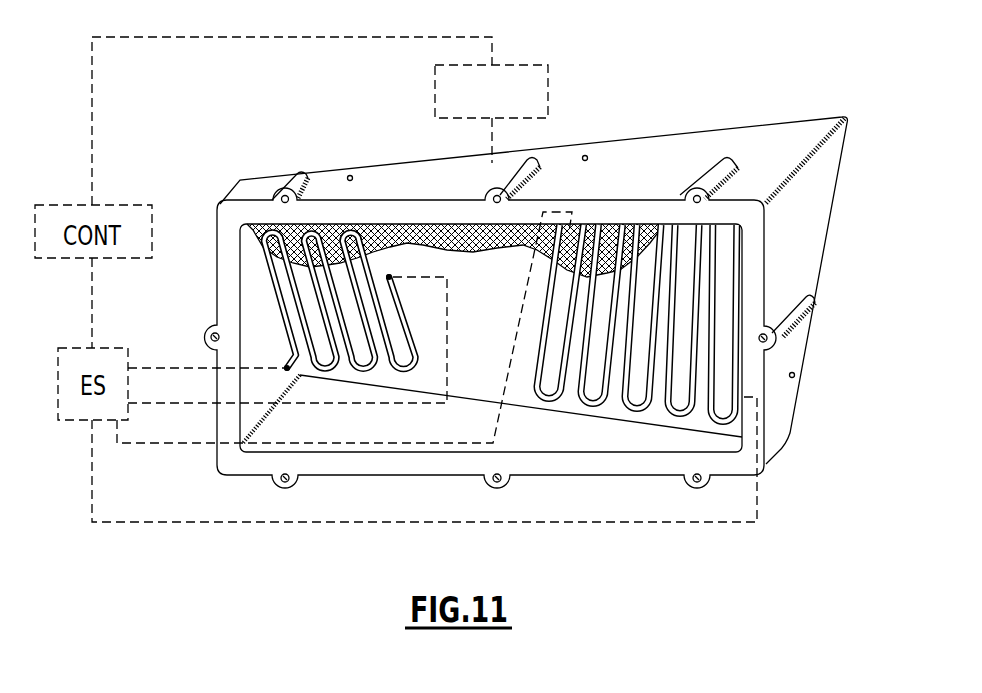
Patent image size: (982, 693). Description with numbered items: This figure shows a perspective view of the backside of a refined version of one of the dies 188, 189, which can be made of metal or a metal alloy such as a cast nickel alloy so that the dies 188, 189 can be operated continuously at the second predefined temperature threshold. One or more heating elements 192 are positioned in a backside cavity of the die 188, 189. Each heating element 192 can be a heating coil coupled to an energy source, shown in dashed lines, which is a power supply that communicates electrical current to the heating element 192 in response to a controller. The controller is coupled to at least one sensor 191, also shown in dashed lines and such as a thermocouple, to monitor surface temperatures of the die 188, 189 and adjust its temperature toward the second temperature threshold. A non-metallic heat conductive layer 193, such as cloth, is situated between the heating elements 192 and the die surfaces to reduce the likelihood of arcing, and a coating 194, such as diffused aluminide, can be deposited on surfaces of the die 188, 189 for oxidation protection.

The die 188 is at (485, 301).
The die 189 is at (259, 177).
The sensor 191 is at (515, 109).
The heating element 192 is at (274, 283).
The non-metallic heat conductive layer 193 is at (466, 228).
The coating 194 is at (790, 352).